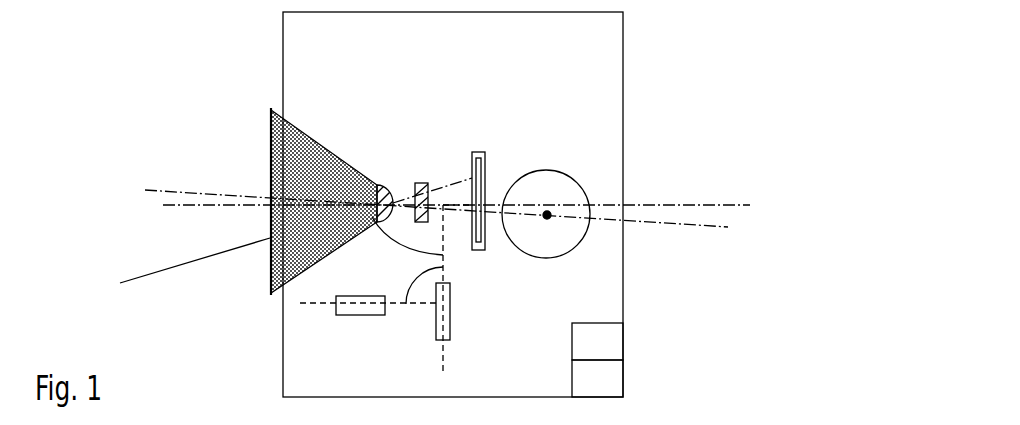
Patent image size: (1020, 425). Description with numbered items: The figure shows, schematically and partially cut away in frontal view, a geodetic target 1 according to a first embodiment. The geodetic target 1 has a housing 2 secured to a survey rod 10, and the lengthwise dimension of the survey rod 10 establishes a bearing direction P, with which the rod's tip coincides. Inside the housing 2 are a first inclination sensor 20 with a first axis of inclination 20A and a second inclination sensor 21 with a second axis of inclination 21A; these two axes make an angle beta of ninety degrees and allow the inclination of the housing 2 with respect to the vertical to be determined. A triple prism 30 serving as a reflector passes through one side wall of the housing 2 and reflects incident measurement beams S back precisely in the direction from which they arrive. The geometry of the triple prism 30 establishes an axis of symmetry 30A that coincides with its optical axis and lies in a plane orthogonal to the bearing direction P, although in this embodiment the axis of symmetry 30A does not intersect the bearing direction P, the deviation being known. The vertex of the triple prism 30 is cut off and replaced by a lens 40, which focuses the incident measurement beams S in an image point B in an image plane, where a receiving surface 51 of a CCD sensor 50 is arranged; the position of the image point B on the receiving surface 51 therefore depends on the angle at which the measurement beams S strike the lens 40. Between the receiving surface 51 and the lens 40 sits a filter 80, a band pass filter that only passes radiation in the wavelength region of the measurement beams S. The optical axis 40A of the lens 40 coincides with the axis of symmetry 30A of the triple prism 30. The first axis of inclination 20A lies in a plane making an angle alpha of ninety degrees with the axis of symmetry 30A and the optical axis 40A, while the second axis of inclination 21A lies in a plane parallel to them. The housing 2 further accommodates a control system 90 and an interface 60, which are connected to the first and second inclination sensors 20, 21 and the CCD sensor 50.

The geodetic target 1 is at (738, 31).
The housing 2 is at (623, 93).
The survey rod 10 is at (545, 258).
The first inclination sensor 20 is at (452, 320).
The first axis of inclination 20A is at (448, 362).
The second inclination sensor 21 is at (366, 315).
The second axis of inclination 21A is at (306, 310).
The triple prism 30 is at (271, 128).
The axis of symmetry 30A is at (183, 205).
The lens 40 is at (384, 185).
The optical axis 40A is at (212, 200).
The CCD sensor 50 is at (485, 155).
The receiving surface 51 is at (467, 233).
The interface 60 is at (612, 380).
The filter 80 is at (420, 183).
The control system 90 is at (612, 342).
The image point B is at (468, 180).
The bearing direction P is at (545, 218).
The measurement beams S is at (155, 275).
The angle alpha is at (407, 236).
The angle beta is at (410, 283).